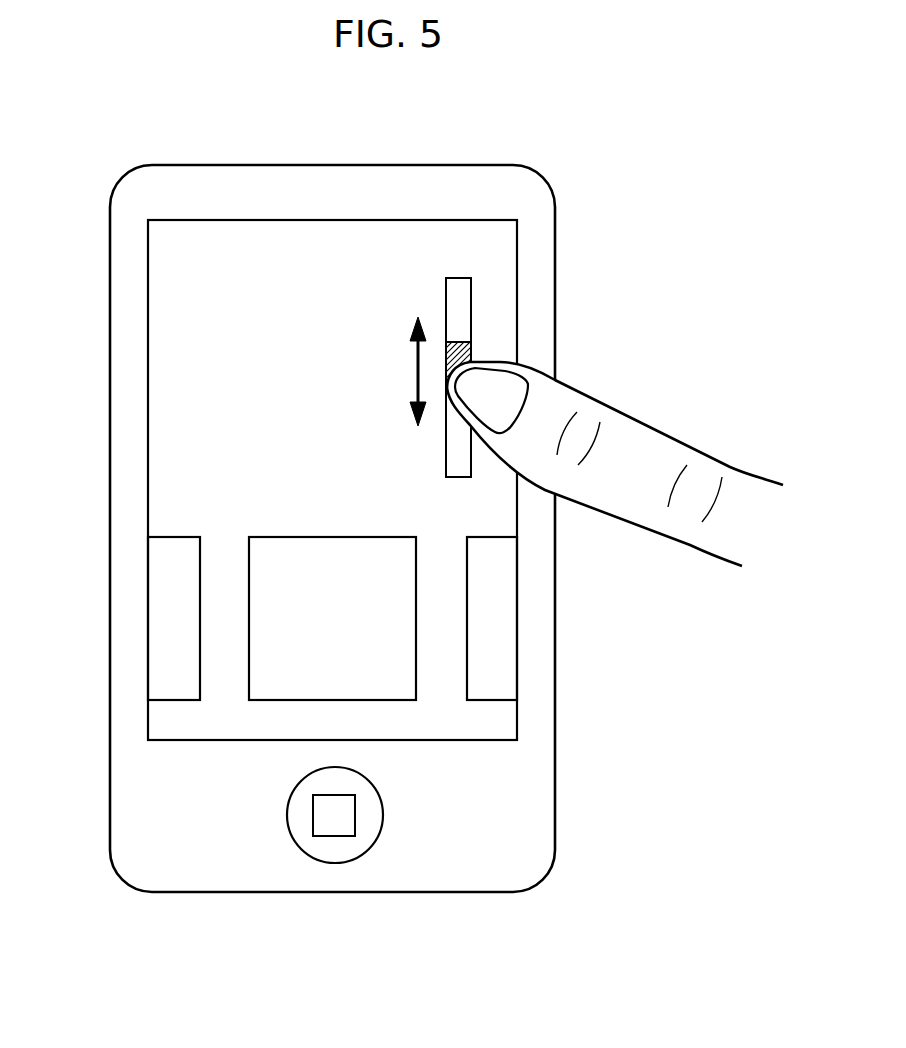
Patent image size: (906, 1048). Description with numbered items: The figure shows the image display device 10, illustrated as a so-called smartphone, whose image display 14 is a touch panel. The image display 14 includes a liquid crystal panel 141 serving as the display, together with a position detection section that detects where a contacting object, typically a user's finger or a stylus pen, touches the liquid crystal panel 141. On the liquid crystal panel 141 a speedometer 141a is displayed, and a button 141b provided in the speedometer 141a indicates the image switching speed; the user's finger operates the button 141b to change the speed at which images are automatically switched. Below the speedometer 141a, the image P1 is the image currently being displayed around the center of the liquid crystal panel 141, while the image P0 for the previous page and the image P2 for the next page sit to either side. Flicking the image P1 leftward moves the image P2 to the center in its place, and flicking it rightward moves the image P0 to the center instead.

The image display device 10 is at (415, 484).
The image display 14 is at (147, 325).
The liquid crystal panel 141 is at (168, 405).
The speedometer 141a is at (474, 298).
The button 141b is at (474, 350).
The image for the previous page P0 is at (168, 618).
The image currently being displayed P1 is at (303, 552).
The image for the next page P2 is at (505, 615).